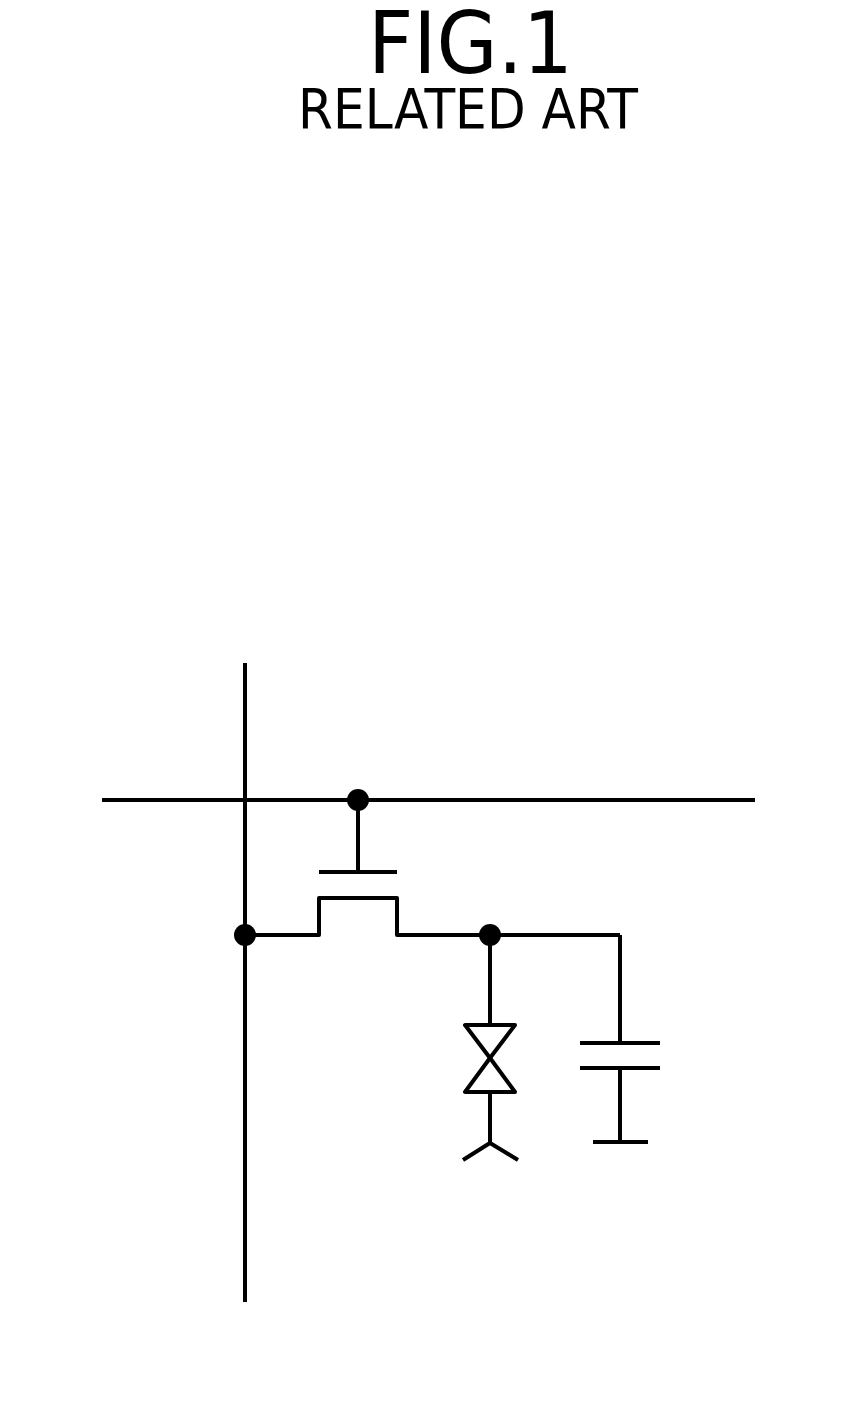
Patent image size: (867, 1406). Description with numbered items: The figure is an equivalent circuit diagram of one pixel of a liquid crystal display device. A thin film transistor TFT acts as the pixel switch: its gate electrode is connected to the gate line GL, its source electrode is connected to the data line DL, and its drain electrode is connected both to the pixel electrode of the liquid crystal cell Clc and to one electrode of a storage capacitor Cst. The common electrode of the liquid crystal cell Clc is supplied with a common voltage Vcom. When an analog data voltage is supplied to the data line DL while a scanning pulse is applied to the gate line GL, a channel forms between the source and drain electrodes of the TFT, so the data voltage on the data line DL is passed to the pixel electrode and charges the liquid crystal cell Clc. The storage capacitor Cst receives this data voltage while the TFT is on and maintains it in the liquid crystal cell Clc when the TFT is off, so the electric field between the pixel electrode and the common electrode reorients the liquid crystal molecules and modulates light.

The data line DL is at (245, 952).
The gate line GL is at (392, 806).
The thin film transistor TFT is at (432, 873).
The liquid crystal cell Clc is at (456, 1039).
The storage capacitor Cst is at (665, 1038).
The common voltage Vcom is at (494, 1176).